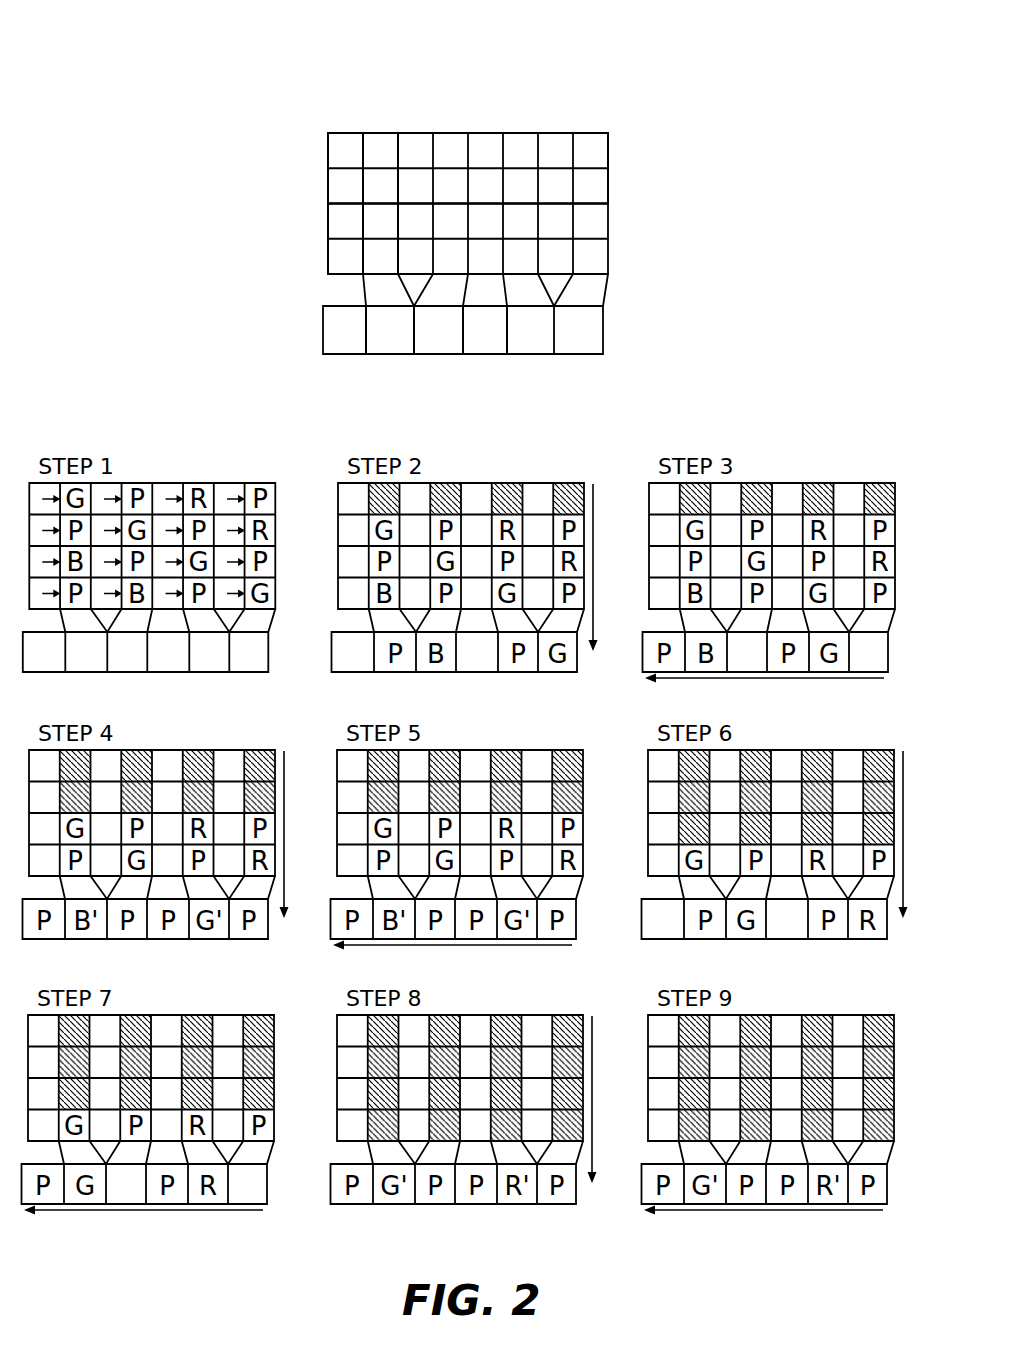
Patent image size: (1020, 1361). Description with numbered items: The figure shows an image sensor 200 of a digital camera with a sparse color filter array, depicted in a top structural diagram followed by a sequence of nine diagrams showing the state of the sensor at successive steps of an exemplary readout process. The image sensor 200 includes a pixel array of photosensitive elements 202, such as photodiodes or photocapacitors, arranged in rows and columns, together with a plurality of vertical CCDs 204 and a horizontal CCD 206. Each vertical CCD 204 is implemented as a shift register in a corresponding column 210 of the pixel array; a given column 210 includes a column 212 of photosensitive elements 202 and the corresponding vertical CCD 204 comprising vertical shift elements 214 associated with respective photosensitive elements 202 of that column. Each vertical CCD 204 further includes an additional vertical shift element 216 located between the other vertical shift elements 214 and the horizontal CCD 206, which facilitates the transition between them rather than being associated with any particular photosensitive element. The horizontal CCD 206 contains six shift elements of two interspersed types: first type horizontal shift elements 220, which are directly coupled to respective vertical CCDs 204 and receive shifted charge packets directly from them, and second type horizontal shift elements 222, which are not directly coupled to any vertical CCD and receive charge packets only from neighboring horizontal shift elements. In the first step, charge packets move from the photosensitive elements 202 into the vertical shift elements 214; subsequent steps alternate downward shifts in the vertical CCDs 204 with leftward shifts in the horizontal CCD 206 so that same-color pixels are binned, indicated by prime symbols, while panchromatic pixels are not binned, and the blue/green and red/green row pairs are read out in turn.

The image sensor 200 is at (577, 111).
The photosensitive elements 202 is at (328, 145).
The vertical CCD 204 is at (363, 125).
The horizontal CCD 206 is at (323, 302).
The column of the pixel array 210 is at (398, 63).
The column of photosensitive elements 212 is at (363, 125).
The vertical shift elements 214 is at (608, 145).
The additional vertical shift element 216 is at (603, 294).
The first type horizontal shift elements 220 is at (388, 352).
The second type horizontal shift elements 222 is at (483, 353).